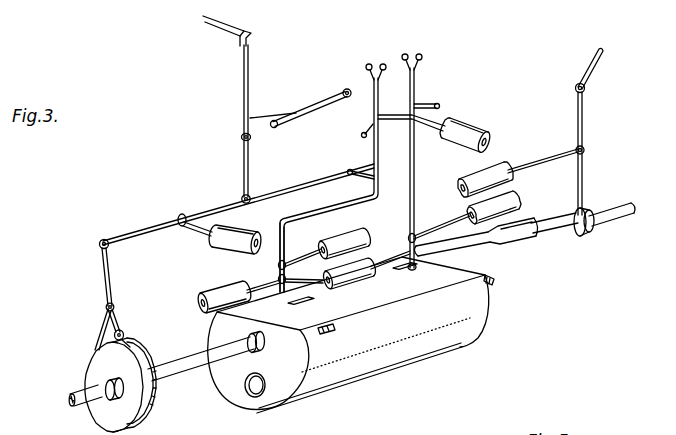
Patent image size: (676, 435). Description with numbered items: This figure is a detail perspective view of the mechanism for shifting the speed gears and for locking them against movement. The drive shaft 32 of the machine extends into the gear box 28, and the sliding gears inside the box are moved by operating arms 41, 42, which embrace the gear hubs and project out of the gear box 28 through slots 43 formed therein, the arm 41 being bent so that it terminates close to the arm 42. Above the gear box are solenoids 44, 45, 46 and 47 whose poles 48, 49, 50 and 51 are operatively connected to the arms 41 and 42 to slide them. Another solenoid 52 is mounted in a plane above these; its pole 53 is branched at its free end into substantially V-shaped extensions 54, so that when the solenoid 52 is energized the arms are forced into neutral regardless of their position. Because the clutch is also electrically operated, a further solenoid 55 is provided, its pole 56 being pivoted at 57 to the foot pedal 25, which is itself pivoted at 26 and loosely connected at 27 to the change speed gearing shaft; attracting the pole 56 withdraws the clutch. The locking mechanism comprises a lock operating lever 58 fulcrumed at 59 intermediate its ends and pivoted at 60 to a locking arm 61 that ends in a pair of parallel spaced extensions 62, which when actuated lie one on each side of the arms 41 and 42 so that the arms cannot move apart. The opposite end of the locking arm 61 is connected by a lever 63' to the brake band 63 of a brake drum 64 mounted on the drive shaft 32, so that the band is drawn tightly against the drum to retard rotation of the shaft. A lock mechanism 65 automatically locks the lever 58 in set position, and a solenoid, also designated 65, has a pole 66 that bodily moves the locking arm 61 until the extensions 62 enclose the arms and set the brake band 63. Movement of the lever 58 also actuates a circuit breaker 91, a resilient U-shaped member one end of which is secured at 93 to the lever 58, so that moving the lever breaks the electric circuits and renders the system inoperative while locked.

The foot pedal 25 is at (596, 77).
The pedal pivot 26 is at (588, 89).
The loose connection 27 is at (601, 207).
The gear box 28 is at (468, 308).
The drive shaft 32 is at (187, 367).
The operating arm 41 is at (291, 218).
The operating arm 42 is at (419, 182).
The slots 43 is at (293, 298).
The solenoid 44 is at (348, 234).
The solenoid 45 is at (343, 287).
The solenoid 46 is at (461, 258).
The solenoid 47 is at (213, 290).
The solenoid pole 48 is at (298, 257).
The solenoid pole 49 is at (392, 248).
The solenoid pole 50 is at (420, 231).
The solenoid pole 51 is at (279, 279).
The neutralizing solenoid 52 is at (476, 135).
The solenoid pole 53 is at (437, 125).
The V-shaped branch extensions 54 is at (431, 99).
The clutch solenoid 55 is at (500, 165).
The solenoid pole 56 is at (543, 162).
The pole pivot 57 is at (586, 148).
The lock operating lever 58 is at (250, 167).
The fulcrum 59 is at (241, 139).
The pivot 60 is at (241, 198).
The locking arm 61 is at (312, 178).
The parallel spaced extensions 62 is at (357, 177).
The brake band 63 is at (92, 329).
The lever 63' is at (130, 294).
The brake drum 64 is at (147, 343).
The lock mechanism / solenoid 65 is at (247, 40).
The solenoid pole 66 is at (191, 230).
The circuit breaker 91 is at (318, 92).
The securing point 93 is at (275, 120).